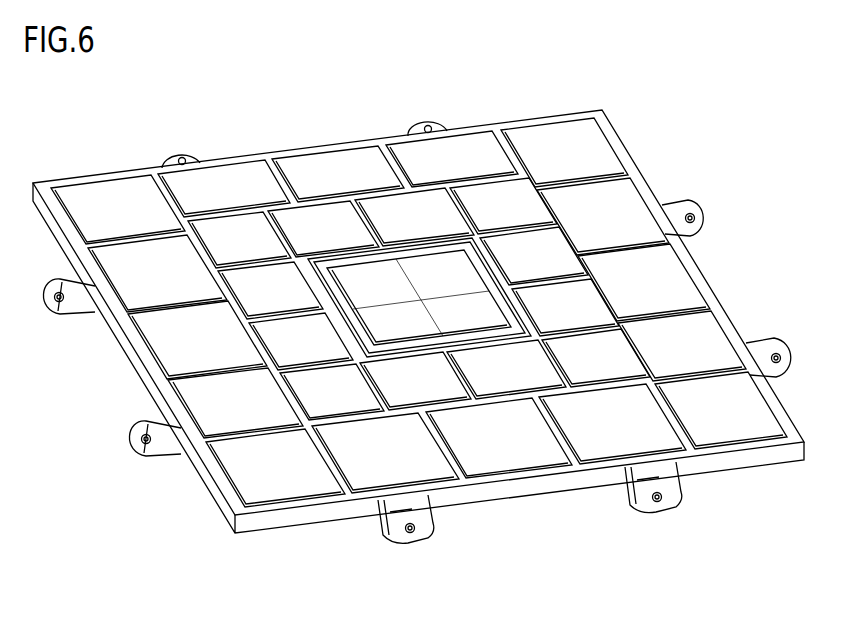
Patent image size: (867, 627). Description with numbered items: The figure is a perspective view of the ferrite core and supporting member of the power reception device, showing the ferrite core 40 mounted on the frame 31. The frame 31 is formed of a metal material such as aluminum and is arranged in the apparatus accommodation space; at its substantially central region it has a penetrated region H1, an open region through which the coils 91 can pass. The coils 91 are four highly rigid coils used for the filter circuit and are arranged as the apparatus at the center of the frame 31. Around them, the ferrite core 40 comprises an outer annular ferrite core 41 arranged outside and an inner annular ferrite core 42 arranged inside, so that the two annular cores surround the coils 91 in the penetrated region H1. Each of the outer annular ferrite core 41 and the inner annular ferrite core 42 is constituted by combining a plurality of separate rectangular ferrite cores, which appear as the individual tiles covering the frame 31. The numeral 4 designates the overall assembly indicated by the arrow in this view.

The panel unit 4 is at (761, 498).
The frame 31 is at (773, 402).
The ferrite core 40 is at (419, 272).
The outer annular ferrite core 41 is at (561, 152).
The inner annular ferrite core 42 is at (524, 200).
The coil 91 is at (470, 312).
The penetrated region H1 is at (343, 337).